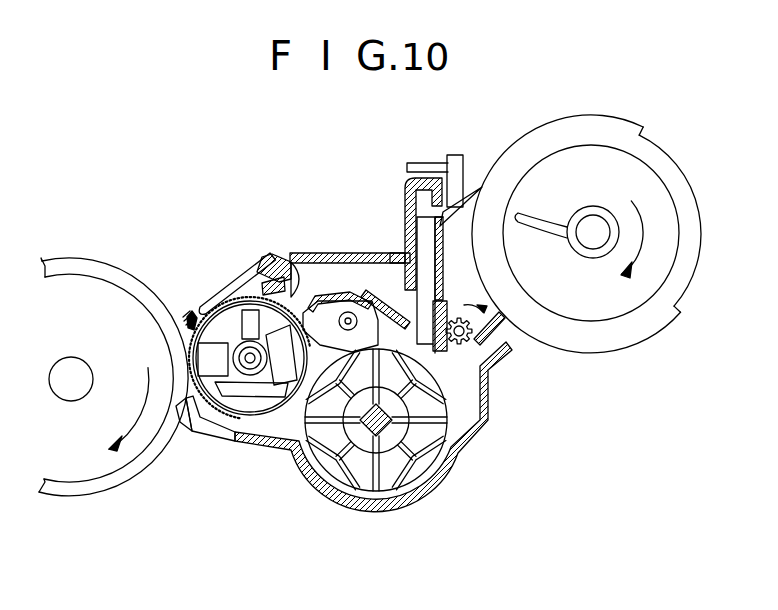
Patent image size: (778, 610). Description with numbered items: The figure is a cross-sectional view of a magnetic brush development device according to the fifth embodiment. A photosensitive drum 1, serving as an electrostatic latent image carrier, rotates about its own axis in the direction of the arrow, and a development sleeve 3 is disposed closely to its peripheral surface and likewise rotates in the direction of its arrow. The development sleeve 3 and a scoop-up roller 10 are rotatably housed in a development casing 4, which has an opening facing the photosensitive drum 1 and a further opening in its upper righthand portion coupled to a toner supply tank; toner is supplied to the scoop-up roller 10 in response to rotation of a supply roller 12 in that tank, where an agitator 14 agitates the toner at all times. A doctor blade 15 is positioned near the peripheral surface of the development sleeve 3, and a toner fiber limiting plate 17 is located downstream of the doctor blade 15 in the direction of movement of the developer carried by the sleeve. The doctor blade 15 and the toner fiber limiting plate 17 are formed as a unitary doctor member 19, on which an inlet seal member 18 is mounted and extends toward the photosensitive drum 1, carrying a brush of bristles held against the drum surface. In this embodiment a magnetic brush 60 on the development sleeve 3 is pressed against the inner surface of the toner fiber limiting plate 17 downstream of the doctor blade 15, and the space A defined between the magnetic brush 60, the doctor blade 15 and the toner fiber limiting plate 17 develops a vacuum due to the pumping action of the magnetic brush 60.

The photosensitive drum 1 is at (108, 261).
The development sleeve 3 is at (276, 416).
The development casing 4 is at (390, 503).
The scoop-up roller 10 is at (445, 407).
The supply roller 12 is at (500, 342).
The agitator 14 is at (548, 227).
The doctor blade 15 is at (298, 262).
The toner fiber limiting plate 17 is at (245, 286).
The inlet seal member 18 is at (213, 297).
The doctor member 19 is at (282, 262).
The magnetic brush 60 is at (188, 316).
The vacuum space A is at (265, 264).